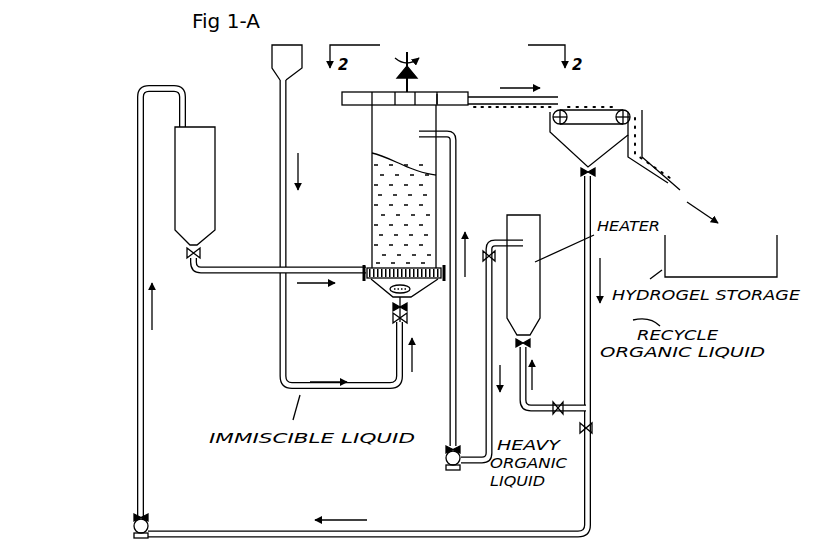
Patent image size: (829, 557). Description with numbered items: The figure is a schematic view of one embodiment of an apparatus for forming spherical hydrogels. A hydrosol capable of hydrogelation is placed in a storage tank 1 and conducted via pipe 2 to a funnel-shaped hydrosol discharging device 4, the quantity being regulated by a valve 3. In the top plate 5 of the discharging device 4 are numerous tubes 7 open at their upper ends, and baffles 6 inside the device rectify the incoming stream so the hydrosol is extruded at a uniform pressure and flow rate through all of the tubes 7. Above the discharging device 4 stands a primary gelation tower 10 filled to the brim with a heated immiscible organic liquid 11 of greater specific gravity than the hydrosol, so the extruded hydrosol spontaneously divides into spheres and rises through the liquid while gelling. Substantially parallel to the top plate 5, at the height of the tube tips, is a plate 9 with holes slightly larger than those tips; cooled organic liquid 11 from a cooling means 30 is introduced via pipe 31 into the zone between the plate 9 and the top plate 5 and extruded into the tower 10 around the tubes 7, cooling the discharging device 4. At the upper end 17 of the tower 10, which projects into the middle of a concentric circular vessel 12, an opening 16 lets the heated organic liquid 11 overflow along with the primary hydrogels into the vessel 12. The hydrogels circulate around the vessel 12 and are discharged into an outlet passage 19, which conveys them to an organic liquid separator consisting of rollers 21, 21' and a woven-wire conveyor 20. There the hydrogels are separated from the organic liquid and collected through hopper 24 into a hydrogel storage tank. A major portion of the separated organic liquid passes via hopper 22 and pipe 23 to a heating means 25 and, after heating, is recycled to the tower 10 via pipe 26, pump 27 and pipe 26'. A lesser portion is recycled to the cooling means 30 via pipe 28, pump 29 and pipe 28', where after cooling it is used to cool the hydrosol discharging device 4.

The storage tank 1 is at (271, 58).
The pipe 2 is at (317, 397).
The valve 3 is at (394, 319).
The hydrosol discharging device 4 is at (380, 288).
The top plate 5 is at (416, 284).
The baffles 6 is at (395, 293).
The tubes 7 is at (428, 279).
The plate 9 is at (382, 269).
The primary gelation tower 10 is at (371, 210).
The immiscible organic liquid 11 is at (380, 178).
The circular vessel 12 is at (340, 98).
The opening 16 is at (404, 100).
The upper end of tower 17 is at (440, 100).
The outlet passage 19 is at (480, 95).
The woven-wire conveyor 20 is at (593, 111).
The roller 21 is at (571, 103).
The roller 21' is at (641, 103).
The hopper 22 is at (603, 158).
The pipe 23 is at (590, 322).
The hopper 24 is at (644, 143).
The heating means 25 is at (540, 272).
The pipe 26 is at (504, 351).
The pipe 26' is at (449, 281).
The pump 27 is at (447, 463).
The pipe 28 is at (354, 518).
The pipe 28' is at (134, 304).
The pump 29 is at (146, 519).
The cooling means 30 is at (104, 193).
The pipe 31 is at (330, 268).